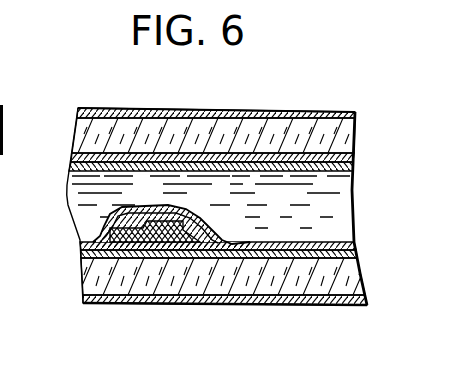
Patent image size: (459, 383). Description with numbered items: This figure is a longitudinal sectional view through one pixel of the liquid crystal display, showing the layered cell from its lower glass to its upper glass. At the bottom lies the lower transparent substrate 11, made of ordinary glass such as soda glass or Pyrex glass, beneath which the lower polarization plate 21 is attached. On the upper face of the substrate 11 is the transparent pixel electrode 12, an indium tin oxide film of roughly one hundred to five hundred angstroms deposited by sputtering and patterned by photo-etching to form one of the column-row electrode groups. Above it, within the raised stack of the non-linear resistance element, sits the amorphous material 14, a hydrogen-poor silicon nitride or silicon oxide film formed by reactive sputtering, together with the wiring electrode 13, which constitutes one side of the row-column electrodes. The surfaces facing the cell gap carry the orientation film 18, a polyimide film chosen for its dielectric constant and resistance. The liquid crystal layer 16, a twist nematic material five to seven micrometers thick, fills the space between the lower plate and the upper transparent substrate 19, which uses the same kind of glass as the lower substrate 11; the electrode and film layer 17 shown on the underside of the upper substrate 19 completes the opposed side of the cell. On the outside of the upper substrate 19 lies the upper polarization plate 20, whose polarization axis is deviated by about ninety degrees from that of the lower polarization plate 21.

The transparent substrate 11 is at (242, 287).
The transparent pixel electrode 12 is at (355, 305).
The wiring electrode 13 is at (125, 237).
The amorphous material 14 is at (136, 259).
The liquid crystal layer 16 is at (338, 228).
The counter electrode / alignment layer 17 is at (333, 150).
The orientation film 18 is at (65, 163).
The upper transparent substrate 19 is at (294, 126).
The upper polarization plate 20 is at (127, 110).
The lower polarization plate 21 is at (305, 303).